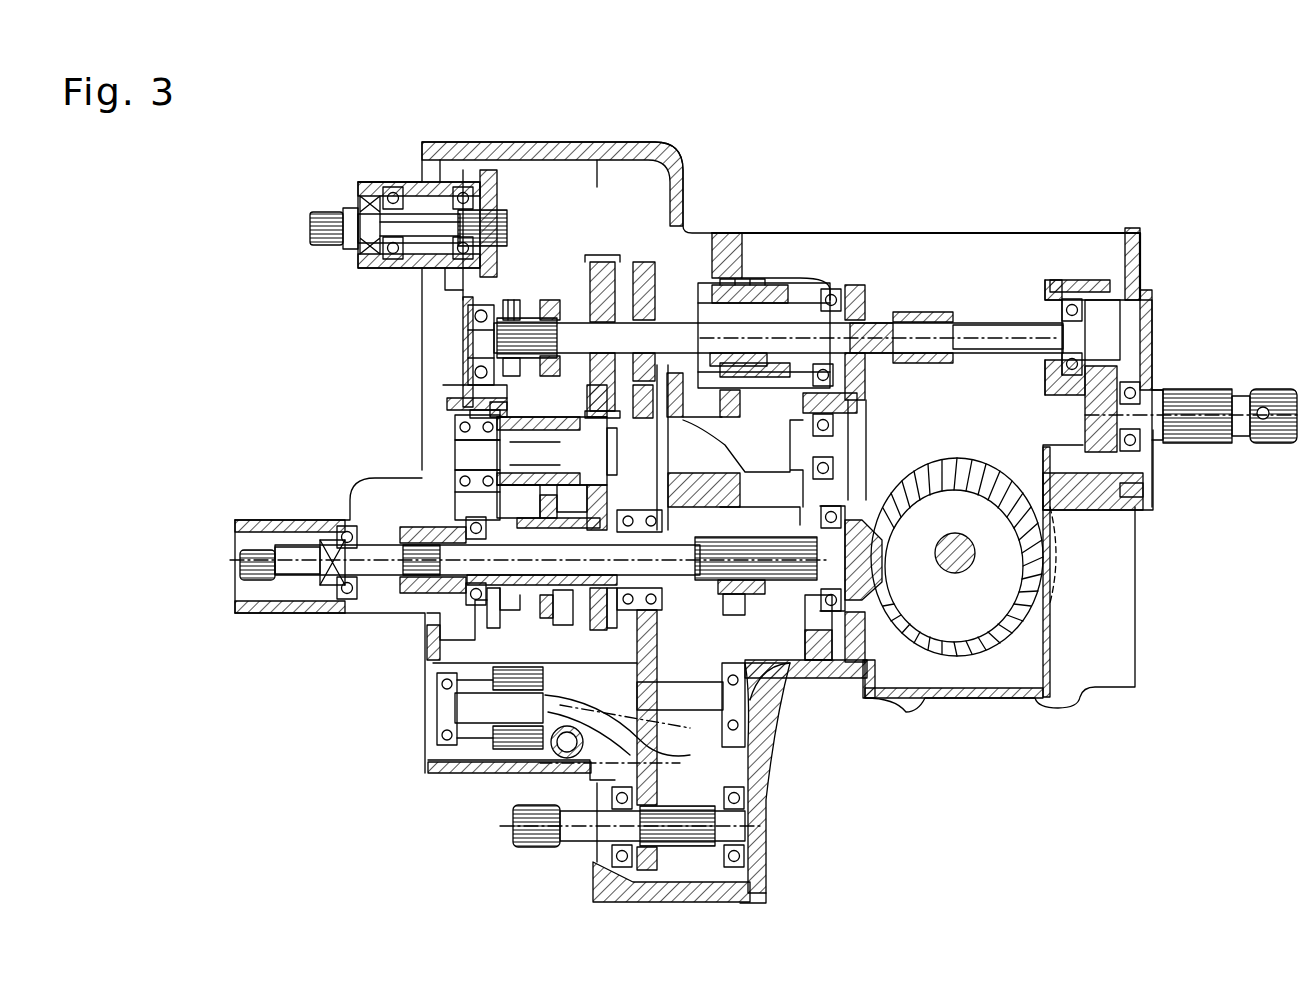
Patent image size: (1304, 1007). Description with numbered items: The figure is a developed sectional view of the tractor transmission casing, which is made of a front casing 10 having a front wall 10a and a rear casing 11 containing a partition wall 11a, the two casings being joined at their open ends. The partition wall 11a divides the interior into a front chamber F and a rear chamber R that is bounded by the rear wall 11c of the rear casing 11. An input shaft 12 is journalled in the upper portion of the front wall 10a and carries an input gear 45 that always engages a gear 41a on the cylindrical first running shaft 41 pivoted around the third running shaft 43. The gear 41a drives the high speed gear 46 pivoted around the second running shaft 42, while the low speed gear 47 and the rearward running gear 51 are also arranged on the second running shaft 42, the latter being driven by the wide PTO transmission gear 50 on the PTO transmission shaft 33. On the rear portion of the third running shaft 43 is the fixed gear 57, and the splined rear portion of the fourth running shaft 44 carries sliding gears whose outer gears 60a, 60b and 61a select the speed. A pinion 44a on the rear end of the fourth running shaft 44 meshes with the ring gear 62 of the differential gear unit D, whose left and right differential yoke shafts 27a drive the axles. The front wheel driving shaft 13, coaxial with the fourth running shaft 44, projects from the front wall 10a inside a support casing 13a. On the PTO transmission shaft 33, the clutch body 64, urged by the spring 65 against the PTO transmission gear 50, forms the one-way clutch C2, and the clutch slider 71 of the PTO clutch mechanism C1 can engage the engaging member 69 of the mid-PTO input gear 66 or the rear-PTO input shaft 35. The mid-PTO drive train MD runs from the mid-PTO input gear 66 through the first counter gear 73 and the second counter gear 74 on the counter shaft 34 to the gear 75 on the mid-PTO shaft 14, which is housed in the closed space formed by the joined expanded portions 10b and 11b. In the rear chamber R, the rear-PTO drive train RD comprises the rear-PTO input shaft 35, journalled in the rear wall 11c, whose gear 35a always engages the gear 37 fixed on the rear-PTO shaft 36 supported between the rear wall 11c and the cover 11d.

The front casing 10 is at (428, 145).
The front wall 10a is at (460, 283).
The expanded portion 10b is at (595, 878).
The rear casing 11 is at (684, 186).
The partition wall 11a is at (845, 432).
The expanded portion 11b is at (766, 826).
The rear wall 11c is at (1030, 656).
The cover 11d is at (1150, 318).
The input shaft 12 is at (310, 228).
The front wheel driving shaft 13 is at (272, 550).
The support casing 13a is at (347, 478).
The mid-PTO shaft 14 is at (513, 828).
The differential yoke shafts 27a is at (976, 553).
The PTO transmission shaft 33 is at (478, 348).
The counter shaft 34 is at (447, 708).
The rear-PTO input shaft 35 is at (873, 316).
The gear 35a is at (1103, 305).
The rear-PTO shaft 36 is at (1212, 388).
The gear 37 is at (1105, 478).
The first running shaft 41 is at (462, 403).
The gear 41a is at (512, 394).
The second running shaft 42 is at (458, 545).
The third running shaft 43 is at (466, 452).
The fourth running shaft 44 is at (463, 578).
The pinion 44a is at (874, 508).
The input gear 45 is at (495, 176).
The high speed gear 46 is at (486, 614).
The low speed gear 47 is at (553, 626).
The PTO transmission gear 50 is at (603, 262).
The rearward running gear 51 is at (608, 628).
The gear 57 is at (740, 390).
The outer gear 60a is at (810, 662).
The outer gear 60b is at (784, 662).
The outer gear 61a is at (738, 616).
The ring gear 62 is at (990, 460).
The clutch body 64 is at (547, 312).
The spring 65 is at (526, 312).
The mid-PTO input gear 66 is at (648, 262).
The engaging member 69 is at (710, 300).
The clutch slider 71 is at (760, 300).
The first counter gear 73 is at (637, 490).
The second counter gear 74 is at (678, 650).
The gear 75 is at (748, 882).
The front chamber F is at (624, 140).
The rear chamber R is at (973, 218).
The rear-PTO drive train RD is at (1022, 286).
The PTO clutch mechanism C1 is at (730, 286).
The one-way clutch C2 is at (571, 254).
The differential gear unit D is at (990, 672).
The mid-PTO drive train MD is at (682, 776).